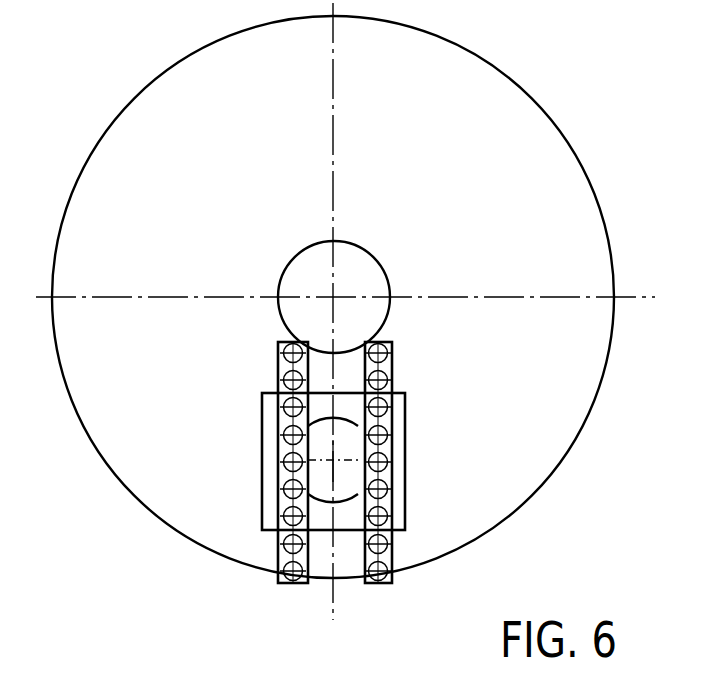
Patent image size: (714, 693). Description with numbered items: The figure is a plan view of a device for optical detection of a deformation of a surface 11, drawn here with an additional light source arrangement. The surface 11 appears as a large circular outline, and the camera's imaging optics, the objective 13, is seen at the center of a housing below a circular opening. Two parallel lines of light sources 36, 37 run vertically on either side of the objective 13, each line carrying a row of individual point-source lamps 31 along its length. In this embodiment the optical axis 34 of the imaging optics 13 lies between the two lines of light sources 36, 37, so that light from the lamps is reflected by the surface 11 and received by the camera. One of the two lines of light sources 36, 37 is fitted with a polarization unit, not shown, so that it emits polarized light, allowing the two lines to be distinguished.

The surface 11 is at (537, 150).
The objective 13 is at (357, 447).
The fastening screws 31 is at (384, 407).
The optical axis 34 is at (333, 461).
The line of light sources 36 is at (287, 581).
The line of light sources 37 is at (383, 581).